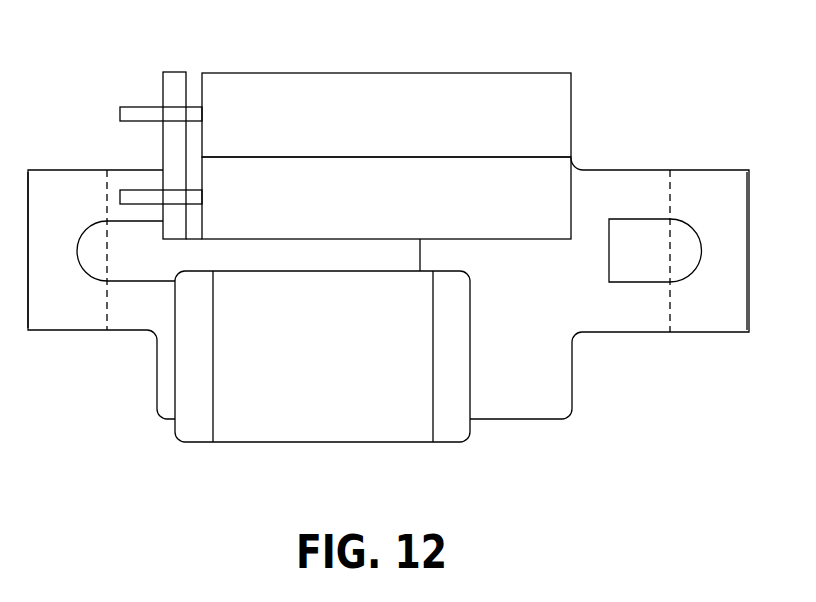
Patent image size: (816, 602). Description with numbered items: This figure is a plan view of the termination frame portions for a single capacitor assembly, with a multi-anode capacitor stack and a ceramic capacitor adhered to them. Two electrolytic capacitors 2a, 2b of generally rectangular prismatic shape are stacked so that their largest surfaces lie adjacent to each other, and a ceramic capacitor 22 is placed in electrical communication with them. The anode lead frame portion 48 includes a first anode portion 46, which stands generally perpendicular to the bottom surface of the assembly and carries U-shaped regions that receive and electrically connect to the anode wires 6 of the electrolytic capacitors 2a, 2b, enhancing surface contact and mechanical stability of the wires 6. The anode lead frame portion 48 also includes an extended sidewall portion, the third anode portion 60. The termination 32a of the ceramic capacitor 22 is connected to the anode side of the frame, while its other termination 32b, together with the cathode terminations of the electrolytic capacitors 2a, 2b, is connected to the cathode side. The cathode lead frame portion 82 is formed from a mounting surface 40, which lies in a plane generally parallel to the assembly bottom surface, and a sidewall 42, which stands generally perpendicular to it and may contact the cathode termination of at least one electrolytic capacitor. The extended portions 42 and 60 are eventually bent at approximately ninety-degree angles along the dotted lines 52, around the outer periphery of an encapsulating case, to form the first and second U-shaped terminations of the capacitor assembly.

The electrolytic capacitor 2a is at (386, 115).
The electrolytic capacitor 2b is at (386, 198).
The anode wire 6 is at (135, 113).
The ceramic capacitor 22 is at (322, 356).
The termination 32a is at (201, 420).
The termination 32b is at (448, 426).
The mounting surface 40 is at (388, 288).
The sidewall 42 is at (730, 227).
The first anode portion 46 is at (176, 83).
The anode lead frame portion 48 is at (166, 315).
The dotted line 52 is at (107, 188).
The third anode portion 60 is at (50, 317).
The cathode lead frame portion 82 is at (585, 212).